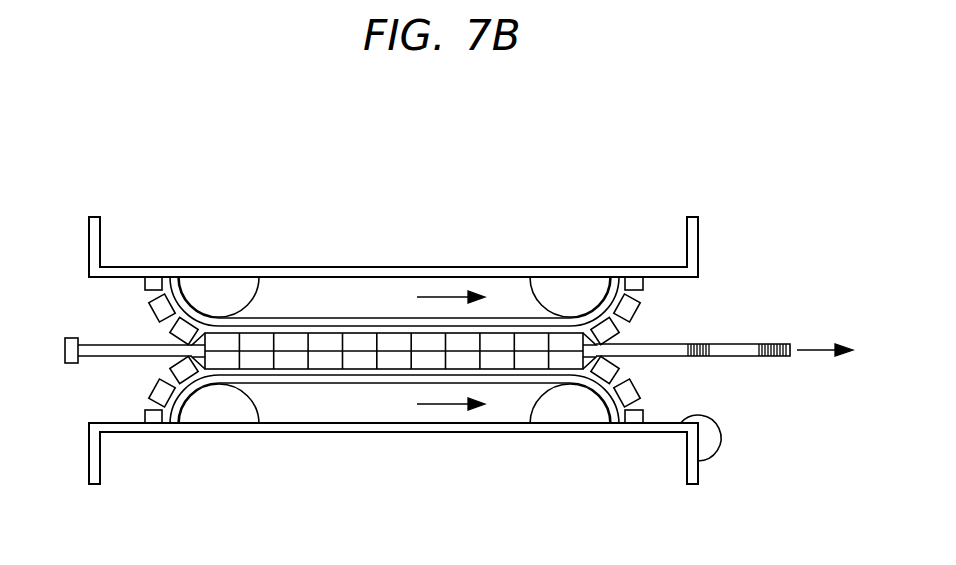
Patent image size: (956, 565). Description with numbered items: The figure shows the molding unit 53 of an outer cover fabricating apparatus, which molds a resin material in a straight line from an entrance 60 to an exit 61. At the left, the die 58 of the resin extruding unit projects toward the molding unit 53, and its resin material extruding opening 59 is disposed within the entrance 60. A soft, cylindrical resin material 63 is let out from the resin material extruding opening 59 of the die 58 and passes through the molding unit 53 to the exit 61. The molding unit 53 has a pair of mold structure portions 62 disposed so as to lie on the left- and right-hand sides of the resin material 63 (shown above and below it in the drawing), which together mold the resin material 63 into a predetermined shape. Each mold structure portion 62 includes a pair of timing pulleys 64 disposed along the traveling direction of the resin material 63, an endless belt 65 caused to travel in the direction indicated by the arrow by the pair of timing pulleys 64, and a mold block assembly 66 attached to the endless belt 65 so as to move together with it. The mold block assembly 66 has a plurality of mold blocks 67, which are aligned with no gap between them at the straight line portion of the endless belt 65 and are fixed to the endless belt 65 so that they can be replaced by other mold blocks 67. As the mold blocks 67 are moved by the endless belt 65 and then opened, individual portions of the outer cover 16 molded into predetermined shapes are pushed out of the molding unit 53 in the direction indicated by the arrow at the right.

The outer cover 16 is at (728, 346).
The molding unit 53 is at (560, 148).
The die 58 is at (66, 346).
The resin material extruding opening 59 is at (71, 350).
The entrance 60 is at (97, 288).
The exit 61 is at (680, 293).
The mold structure portions 62 is at (377, 298).
The resin material 63 is at (127, 356).
The timing pulleys 64 is at (215, 292).
The endless belt 65 is at (290, 326).
The mold block assembly 66 is at (640, 318).
The mold blocks 67 is at (358, 345).